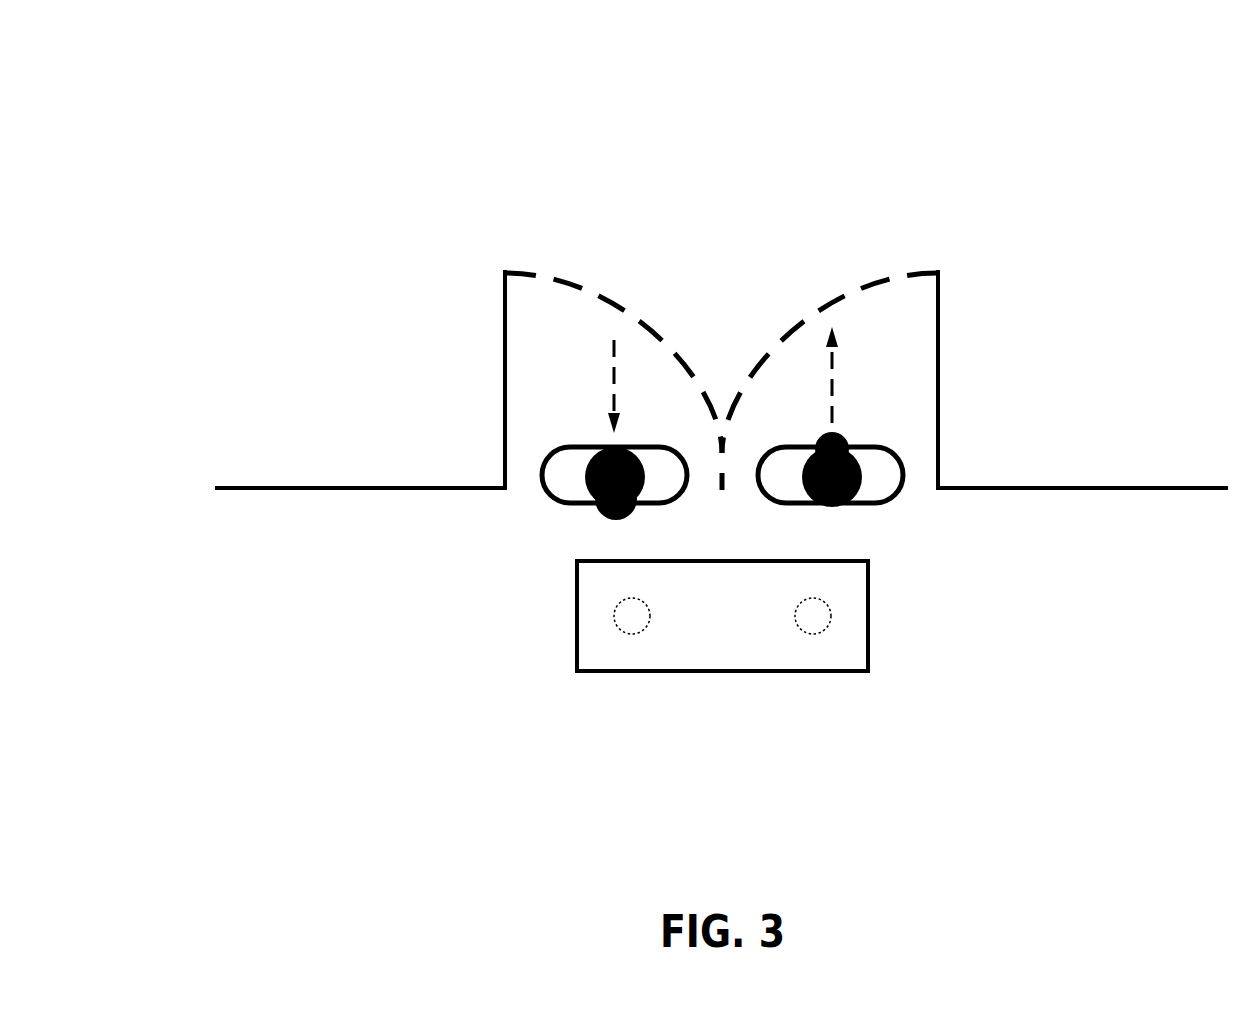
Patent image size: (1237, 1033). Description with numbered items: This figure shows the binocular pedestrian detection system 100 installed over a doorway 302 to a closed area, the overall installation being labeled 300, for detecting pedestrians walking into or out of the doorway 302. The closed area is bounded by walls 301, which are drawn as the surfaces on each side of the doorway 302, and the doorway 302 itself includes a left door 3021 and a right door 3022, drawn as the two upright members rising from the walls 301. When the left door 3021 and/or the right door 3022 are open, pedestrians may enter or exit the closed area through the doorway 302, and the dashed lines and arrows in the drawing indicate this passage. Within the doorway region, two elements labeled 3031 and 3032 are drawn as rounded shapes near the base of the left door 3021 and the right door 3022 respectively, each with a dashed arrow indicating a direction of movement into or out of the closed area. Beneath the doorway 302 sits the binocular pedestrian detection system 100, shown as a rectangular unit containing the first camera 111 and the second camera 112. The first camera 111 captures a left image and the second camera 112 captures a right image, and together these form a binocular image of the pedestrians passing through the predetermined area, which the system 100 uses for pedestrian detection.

The air flow control system 300 is at (146, 87).
The walls 301 is at (355, 490).
The doorway 302 is at (723, 330).
The left door 3021 is at (505, 383).
The right door 3022 is at (938, 383).
The left air port 3031 is at (542, 462).
The right air port 3032 is at (903, 462).
The binocular pedestrian detection system 100 is at (577, 621).
The first camera 111 is at (632, 635).
The second camera 112 is at (813, 635).